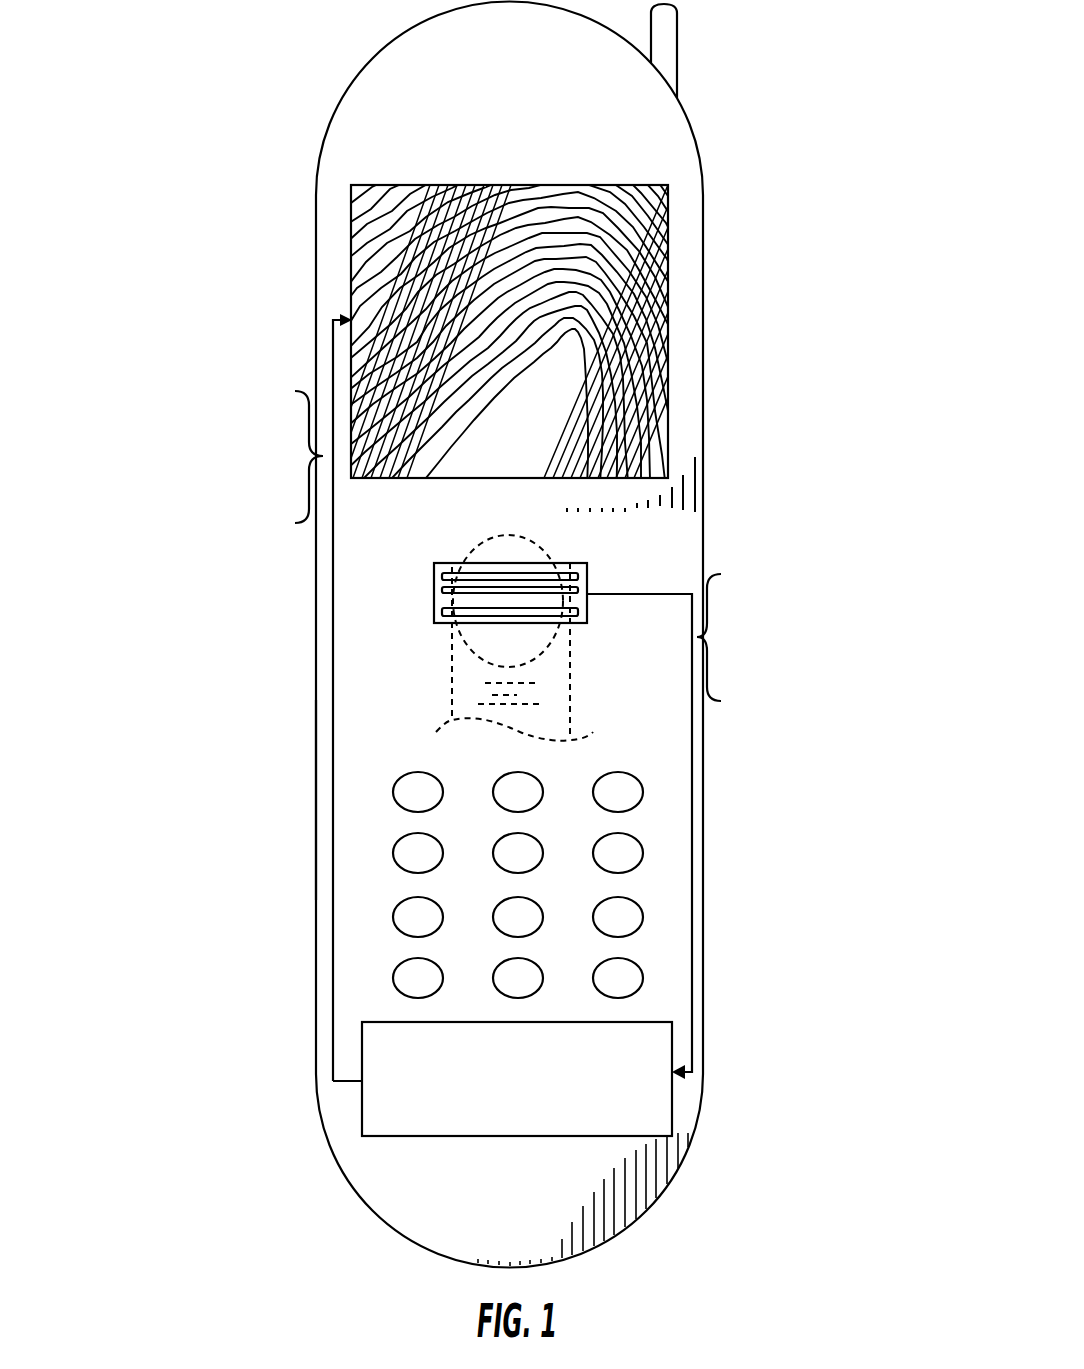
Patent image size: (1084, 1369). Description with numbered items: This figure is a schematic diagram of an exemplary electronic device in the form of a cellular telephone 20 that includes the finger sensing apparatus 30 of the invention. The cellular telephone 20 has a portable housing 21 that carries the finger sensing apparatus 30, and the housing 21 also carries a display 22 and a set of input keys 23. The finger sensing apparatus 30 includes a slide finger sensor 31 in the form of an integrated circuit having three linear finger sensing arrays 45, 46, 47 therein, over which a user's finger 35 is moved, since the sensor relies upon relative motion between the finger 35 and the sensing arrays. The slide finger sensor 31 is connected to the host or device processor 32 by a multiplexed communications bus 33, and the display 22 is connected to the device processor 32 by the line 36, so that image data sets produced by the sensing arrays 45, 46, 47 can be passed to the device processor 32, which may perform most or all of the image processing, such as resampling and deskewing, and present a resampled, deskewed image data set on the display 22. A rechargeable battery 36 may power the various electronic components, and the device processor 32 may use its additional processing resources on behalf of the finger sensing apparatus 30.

The cellular telephone 20 is at (812, 161).
The portable housing 21 is at (703, 480).
The display 22 is at (668, 323).
The input keys 23 is at (540, 780).
The finger sensing apparatus 30 is at (347, 1099).
The slide finger sensor 31 is at (545, 587).
The device processor 32 is at (672, 1108).
The multiplexed communications bus 33 is at (694, 995).
The user's finger 35 is at (448, 665).
The rechargeable battery 36 is at (317, 805).
The linear finger sensing array 45 is at (434, 571).
The linear finger sensing array 46 is at (434, 589).
The linear finger sensing array 47 is at (434, 607).